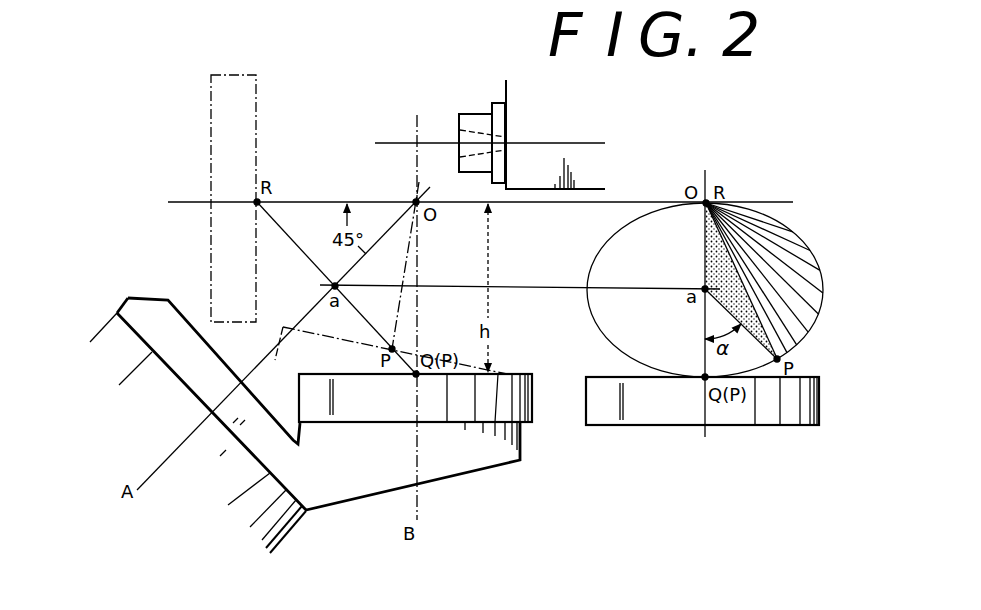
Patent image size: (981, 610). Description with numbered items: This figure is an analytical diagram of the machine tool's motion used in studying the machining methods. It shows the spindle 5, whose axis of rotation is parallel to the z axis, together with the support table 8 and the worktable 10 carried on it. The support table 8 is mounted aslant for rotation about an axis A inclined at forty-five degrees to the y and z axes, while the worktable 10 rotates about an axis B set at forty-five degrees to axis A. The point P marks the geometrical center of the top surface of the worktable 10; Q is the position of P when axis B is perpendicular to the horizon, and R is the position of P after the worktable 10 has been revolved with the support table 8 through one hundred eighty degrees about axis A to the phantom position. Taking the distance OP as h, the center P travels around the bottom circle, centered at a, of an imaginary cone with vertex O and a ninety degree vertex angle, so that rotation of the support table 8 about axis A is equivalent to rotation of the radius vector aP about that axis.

The spindle 5 is at (476, 120).
The support table 8 is at (168, 306).
The worktable 10 is at (514, 374).